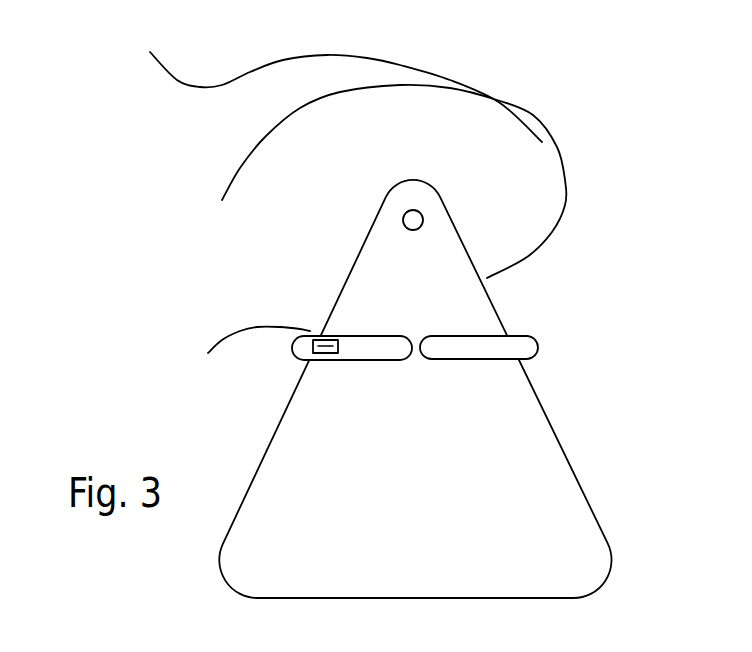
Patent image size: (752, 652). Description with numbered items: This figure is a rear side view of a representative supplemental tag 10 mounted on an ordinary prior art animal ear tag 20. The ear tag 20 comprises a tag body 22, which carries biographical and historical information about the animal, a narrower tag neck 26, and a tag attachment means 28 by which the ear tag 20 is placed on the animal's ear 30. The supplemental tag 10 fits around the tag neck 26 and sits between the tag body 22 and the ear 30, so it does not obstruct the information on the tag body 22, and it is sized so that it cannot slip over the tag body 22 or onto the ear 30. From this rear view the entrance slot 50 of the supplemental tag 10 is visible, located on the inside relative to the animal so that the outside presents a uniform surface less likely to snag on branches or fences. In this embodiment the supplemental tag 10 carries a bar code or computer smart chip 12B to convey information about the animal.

The supplemental tag 10 is at (535, 337).
The bar code or computer smart chip 12B is at (312, 340).
The animal ear tag 20 is at (438, 389).
The tag body 22 is at (430, 504).
The tag neck 26 is at (438, 389).
The tag attachment means 28 is at (413, 220).
The ear 30 is at (453, 135).
The entrance slot 50 is at (415, 337).